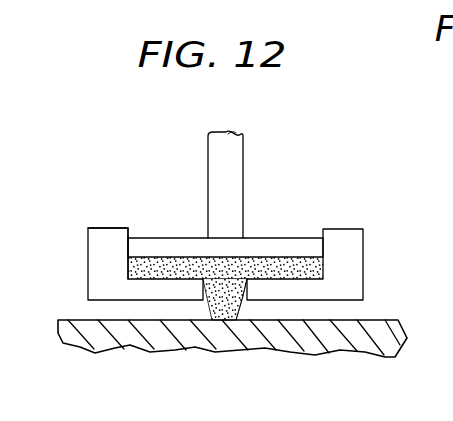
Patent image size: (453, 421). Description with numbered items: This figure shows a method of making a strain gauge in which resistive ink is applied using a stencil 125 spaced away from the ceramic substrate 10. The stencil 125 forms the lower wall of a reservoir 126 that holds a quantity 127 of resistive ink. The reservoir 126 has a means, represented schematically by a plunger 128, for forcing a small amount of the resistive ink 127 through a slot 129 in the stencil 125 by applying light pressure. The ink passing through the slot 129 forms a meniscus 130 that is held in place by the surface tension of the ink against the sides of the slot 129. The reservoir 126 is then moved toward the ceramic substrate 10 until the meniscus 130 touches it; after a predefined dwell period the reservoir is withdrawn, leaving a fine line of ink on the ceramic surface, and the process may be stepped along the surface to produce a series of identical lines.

The ceramic substrate 10 is at (380, 335).
The stencil 125 is at (143, 285).
The reservoir 126 is at (97, 238).
The quantity of resistive ink 127 is at (272, 265).
The plunger 128 is at (230, 162).
The slot 129 is at (247, 300).
The meniscus 130 is at (213, 305).